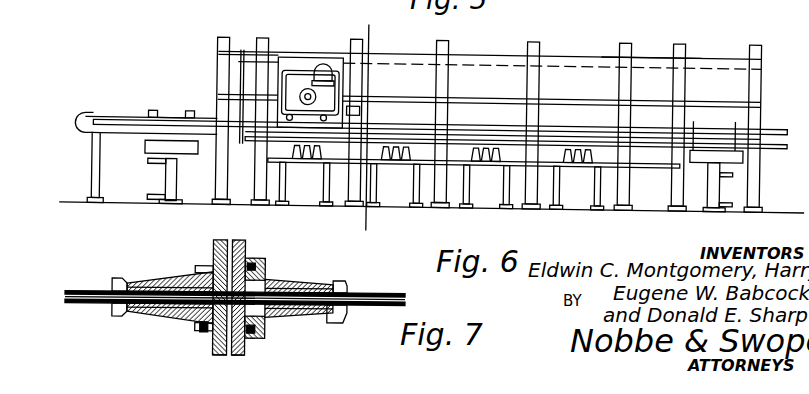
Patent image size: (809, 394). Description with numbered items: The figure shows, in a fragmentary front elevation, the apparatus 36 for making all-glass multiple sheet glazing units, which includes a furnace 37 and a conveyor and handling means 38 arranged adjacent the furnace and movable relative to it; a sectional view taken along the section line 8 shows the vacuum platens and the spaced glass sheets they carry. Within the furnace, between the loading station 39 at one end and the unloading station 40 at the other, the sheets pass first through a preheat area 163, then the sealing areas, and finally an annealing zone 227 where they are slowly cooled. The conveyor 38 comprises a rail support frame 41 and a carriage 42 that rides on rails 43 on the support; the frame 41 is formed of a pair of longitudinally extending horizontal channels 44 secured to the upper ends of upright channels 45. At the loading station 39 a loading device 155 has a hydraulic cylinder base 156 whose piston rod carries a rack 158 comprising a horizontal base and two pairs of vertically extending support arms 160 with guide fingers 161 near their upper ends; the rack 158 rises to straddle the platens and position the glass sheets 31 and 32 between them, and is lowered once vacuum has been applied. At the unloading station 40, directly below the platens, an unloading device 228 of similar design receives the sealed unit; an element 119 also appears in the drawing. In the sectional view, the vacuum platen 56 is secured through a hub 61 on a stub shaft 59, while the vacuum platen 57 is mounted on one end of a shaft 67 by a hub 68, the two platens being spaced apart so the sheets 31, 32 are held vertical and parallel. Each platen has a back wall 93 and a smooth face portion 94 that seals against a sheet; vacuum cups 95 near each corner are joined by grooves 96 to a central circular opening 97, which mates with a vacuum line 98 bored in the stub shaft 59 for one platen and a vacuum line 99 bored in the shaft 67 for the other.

In FIG. 6, the preheat area 163 is at (239, 52).
In FIG. 6, the conveyor and handling means 38 is at (290, 67).
In FIG. 6, the section line 8 is at (367, 25).
In FIG. 6, the loading station 39 is at (157, 103).
In FIG. 6, the end stop 119 is at (80, 123).
In FIG. 6, the support arms 160 is at (148, 118).
In FIG. 6, the guide fingers 161 is at (188, 118).
In FIG. 6, the rack 158 is at (145, 151).
In FIG. 6, the loading device 155 is at (142, 166).
In FIG. 6, the hydraulic cylinder base 156 is at (170, 183).
In FIG. 6, the rail support frame 41 is at (216, 179).
In FIG. 6, the upright channels 45 is at (260, 182).
In FIG. 6, the carriage 42 is at (359, 113).
In FIG. 6, the apparatus 36 is at (552, 50).
In FIG. 6, the furnace 37 is at (577, 75).
In FIG. 6, the annealing zone 227 is at (650, 49).
In FIG. 6, the unloading station 40 is at (722, 113).
In FIG. 6, the rails 43 is at (768, 123).
In FIG. 6, the horizontally disposed channels 44 is at (773, 138).
In FIG. 6, the unloading device 228 is at (743, 157).
In FIG. 7, the glass sheet 31 is at (97, 292).
In FIG. 7, the glass sheet 32 is at (88, 305).
In FIG. 7, the face portion 94 is at (121, 278).
In FIG. 7, the vacuum cups 95 is at (138, 281).
In FIG. 7, the grooves 96 is at (172, 278).
In FIG. 7, the back wall 93 is at (153, 316).
In FIG. 7, the vacuum line 98 is at (221, 262).
In FIG. 7, the circular opening 97 is at (208, 330).
In FIG. 7, the vacuum line 99 is at (217, 352).
In FIG. 7, the stub shaft 59 is at (246, 250).
In FIG. 7, the hub 61 is at (253, 268).
In FIG. 7, the vacuum platen 56 is at (313, 284).
In FIG. 7, the vacuum platen 57 is at (344, 320).
In FIG. 7, the hub 68 is at (255, 333).
In FIG. 7, the shaft 67 is at (243, 353).